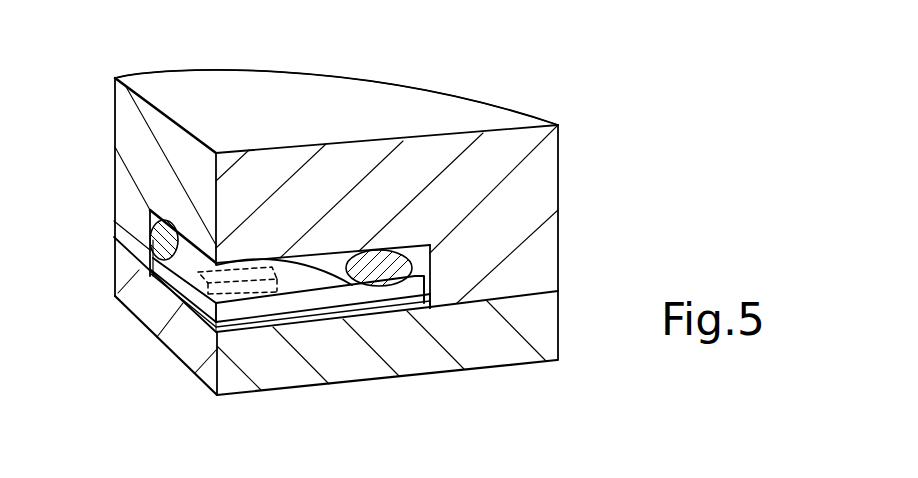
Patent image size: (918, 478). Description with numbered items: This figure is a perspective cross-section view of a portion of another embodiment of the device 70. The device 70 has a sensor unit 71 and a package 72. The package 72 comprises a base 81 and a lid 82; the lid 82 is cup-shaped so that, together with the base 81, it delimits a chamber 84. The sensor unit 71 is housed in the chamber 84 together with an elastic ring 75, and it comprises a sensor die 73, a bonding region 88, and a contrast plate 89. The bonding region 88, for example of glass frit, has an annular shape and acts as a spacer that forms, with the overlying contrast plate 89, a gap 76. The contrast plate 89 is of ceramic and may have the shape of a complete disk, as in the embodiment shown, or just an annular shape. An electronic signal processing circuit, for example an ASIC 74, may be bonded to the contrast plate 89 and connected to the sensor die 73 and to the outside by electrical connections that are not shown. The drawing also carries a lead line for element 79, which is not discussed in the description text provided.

The device 70 is at (624, 126).
The package 72 is at (561, 160).
The lid 82 is at (541, 245).
The base 81 is at (543, 337).
The chamber 84 is at (297, 274).
The elastic ring 75 is at (152, 225).
The contrast plate 89 is at (151, 252).
The bonding region 88 is at (150, 261).
The sensor die 73 is at (153, 273).
The ASIC 74 is at (238, 290).
The gap 76 is at (279, 317).
The conductive layer 79 is at (332, 312).
The sensor unit 71 is at (432, 295).